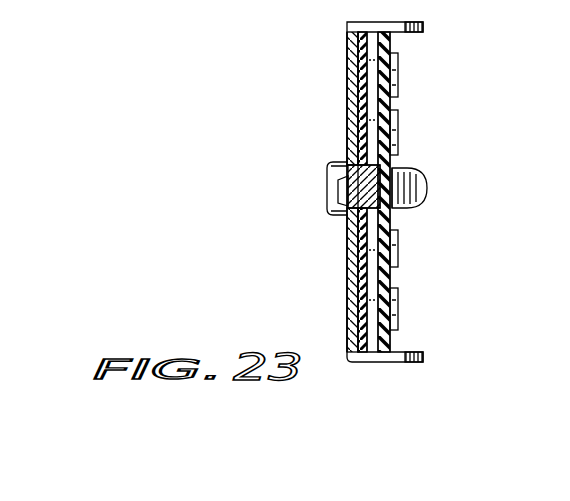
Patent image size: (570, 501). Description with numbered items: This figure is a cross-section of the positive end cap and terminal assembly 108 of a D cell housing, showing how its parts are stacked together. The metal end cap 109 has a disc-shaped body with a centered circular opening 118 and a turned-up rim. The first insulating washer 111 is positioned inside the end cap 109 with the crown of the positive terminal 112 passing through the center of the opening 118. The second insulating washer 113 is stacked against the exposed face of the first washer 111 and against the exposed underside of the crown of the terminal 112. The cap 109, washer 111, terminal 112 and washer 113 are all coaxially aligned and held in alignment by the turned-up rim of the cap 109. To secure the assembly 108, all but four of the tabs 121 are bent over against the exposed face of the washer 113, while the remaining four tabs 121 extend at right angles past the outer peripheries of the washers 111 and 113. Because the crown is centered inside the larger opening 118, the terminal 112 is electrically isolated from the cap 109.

The positive end cap and terminal assembly 108 is at (505, 127).
The metal end cap 109 is at (347, 256).
The first insulating washer 111 is at (363, 341).
The positive terminal 112 is at (328, 179).
The second insulating washer 113 is at (390, 341).
The circular opening 118 is at (349, 165).
The tabs 121 is at (414, 22).